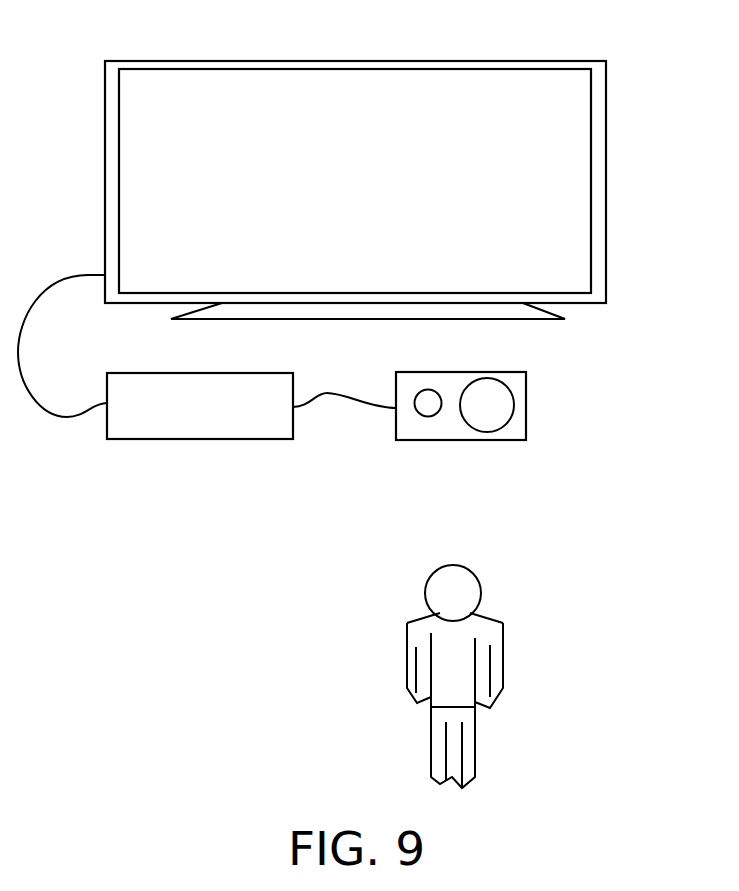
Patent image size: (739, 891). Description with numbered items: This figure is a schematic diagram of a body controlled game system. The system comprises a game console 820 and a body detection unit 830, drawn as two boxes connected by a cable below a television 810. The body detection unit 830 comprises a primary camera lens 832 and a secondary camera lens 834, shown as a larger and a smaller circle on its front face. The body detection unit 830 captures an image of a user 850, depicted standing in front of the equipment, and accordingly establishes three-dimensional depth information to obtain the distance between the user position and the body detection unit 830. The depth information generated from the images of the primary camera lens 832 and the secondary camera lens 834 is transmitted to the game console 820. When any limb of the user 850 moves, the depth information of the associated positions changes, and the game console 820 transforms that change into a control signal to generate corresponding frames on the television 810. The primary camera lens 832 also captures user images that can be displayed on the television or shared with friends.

The television 810 is at (577, 80).
The game console 820 is at (140, 368).
The body detection unit 830 is at (520, 372).
The primary camera lens 832 is at (498, 417).
The secondary camera lens 834 is at (425, 420).
The user 850 is at (490, 615).